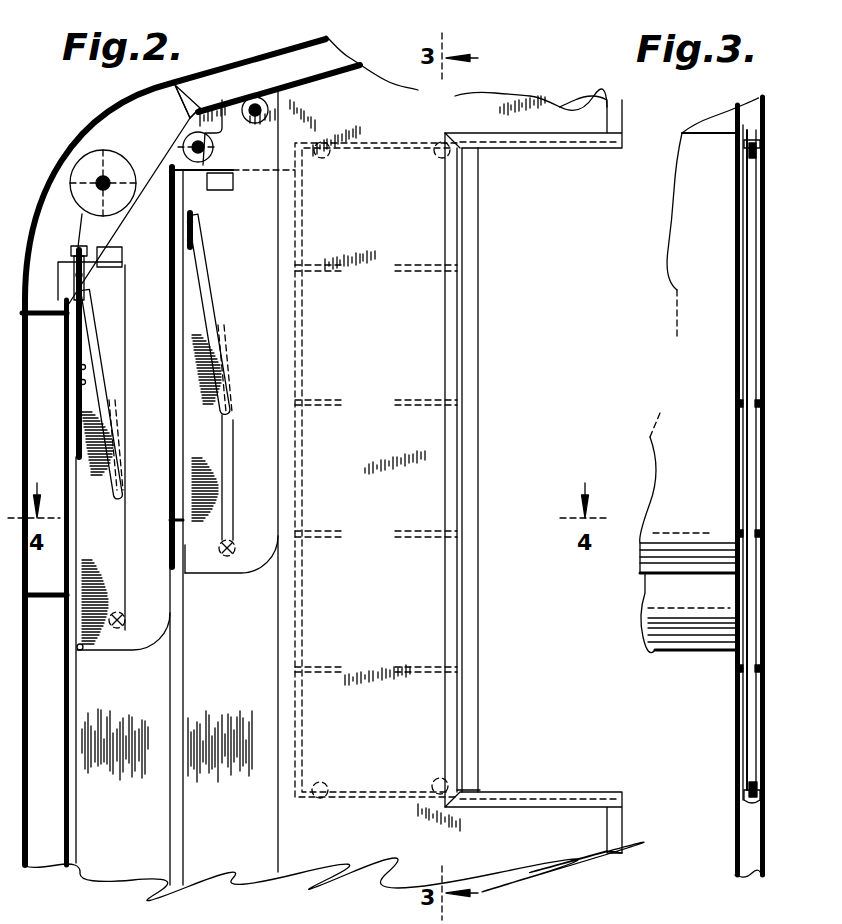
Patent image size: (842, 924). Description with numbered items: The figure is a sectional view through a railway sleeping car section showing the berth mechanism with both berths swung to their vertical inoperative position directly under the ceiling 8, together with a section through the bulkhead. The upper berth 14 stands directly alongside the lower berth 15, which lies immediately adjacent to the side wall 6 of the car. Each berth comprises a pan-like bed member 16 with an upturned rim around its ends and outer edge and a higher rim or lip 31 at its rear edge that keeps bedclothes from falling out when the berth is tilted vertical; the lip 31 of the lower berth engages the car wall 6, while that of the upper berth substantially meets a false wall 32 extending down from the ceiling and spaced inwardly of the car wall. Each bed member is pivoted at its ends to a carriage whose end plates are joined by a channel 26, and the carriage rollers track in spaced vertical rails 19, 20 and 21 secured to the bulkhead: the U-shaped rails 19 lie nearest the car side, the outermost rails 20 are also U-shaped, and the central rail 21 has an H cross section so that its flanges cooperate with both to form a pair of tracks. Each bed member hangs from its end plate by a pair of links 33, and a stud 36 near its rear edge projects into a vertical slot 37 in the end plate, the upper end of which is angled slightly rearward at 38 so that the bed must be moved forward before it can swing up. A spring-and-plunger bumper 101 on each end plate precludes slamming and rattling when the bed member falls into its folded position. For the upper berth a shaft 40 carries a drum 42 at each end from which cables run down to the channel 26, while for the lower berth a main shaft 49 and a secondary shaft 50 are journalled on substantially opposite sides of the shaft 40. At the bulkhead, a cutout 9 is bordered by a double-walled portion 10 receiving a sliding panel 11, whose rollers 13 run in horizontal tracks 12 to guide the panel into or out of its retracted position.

In FIG. 2, the side wall 6 is at (80, 705).
In FIG. 2, the ceiling 8 is at (332, 45).
In FIG. 2, the cutout 9 is at (508, 357).
In FIG. 3, the cutout 9 is at (704, 267).
In FIG. 2, the portion of the bulkhead 10 is at (401, 617).
In FIG. 3, the portion of the bulkhead 10 is at (765, 585).
In FIG. 2, the sliding panel 11 is at (476, 705).
In FIG. 3, the sliding panel 11 is at (758, 632).
In FIG. 2, the horizontal tracks or runners 12 is at (503, 792).
In FIG. 3, the horizontal tracks or runners 12 is at (760, 150).
In FIG. 2, the rollers 13 is at (438, 142).
In FIG. 3, the rollers 13 is at (742, 148).
In FIG. 2, the upper berth 14 is at (253, 585).
In FIG. 3, the upper berth 14 is at (707, 463).
In FIG. 2, the lower berth 15 is at (153, 645).
In FIG. 3, the lower berth 15 is at (688, 587).
In FIG. 2, the bed member 16 is at (280, 358).
In FIG. 2, the rails 19 is at (88, 857).
In FIG. 2, the outermost rails 20 is at (280, 850).
In FIG. 2, the central rail 21 is at (177, 848).
In FIG. 2, the channel 26 is at (80, 393).
In FIG. 2, the rim or lip 31 is at (110, 650).
In FIG. 2, the false wall 32 is at (178, 540).
In FIG. 2, the links 33 is at (100, 330).
In FIG. 2, the studs 36 is at (117, 620).
In FIG. 2, the vertical slot 37 is at (117, 530).
In FIG. 2, the angled upper end of the slot 38 is at (107, 407).
In FIG. 2, the shaft 40 is at (182, 120).
In FIG. 2, the drum 42 is at (182, 147).
In FIG. 2, the main shaft 49 is at (70, 183).
In FIG. 2, the secondary shaft 50 is at (250, 97).
In FIG. 2, the bumper 101 is at (222, 172).